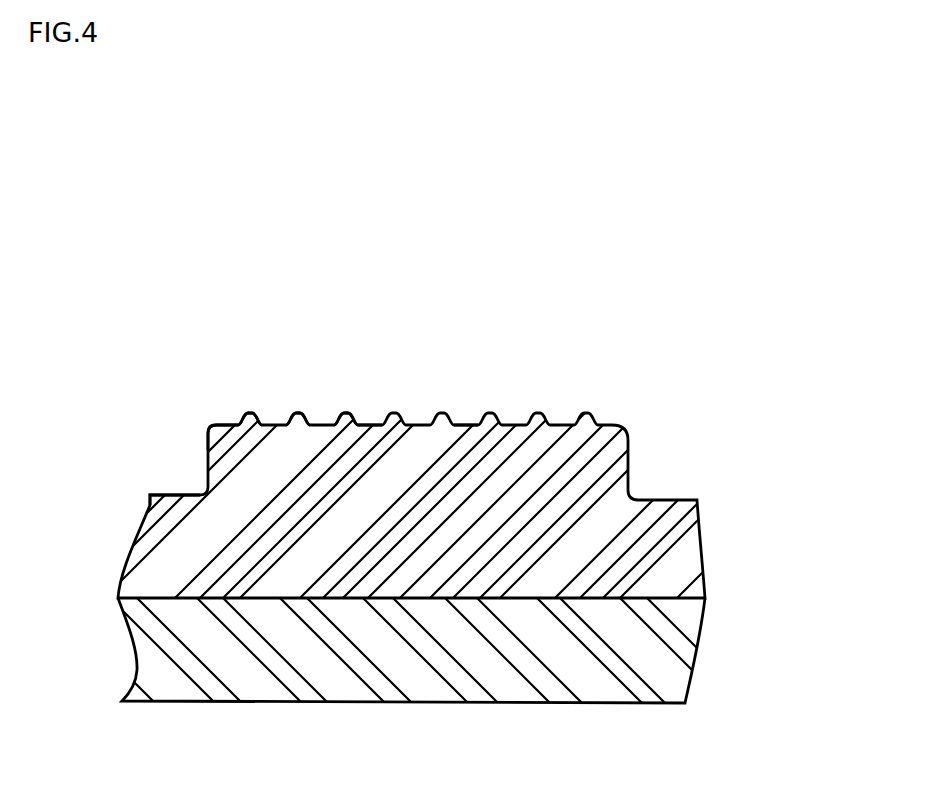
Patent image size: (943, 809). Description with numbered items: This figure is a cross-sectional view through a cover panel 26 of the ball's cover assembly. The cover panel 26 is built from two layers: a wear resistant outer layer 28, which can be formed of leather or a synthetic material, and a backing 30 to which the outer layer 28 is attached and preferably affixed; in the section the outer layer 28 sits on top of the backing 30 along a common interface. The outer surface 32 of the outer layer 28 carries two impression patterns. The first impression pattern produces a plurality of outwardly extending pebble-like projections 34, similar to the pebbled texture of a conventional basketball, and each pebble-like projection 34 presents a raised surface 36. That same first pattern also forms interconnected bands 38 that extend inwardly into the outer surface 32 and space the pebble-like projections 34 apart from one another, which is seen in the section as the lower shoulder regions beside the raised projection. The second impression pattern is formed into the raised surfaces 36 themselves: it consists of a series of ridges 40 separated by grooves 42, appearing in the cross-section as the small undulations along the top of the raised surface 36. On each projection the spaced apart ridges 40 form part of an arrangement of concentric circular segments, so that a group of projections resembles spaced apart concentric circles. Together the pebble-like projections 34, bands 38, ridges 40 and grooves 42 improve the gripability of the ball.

The cover panel 26 is at (683, 313).
The outer layer 28 is at (665, 553).
The backing 30 is at (652, 678).
The outer surface 32 is at (468, 425).
The pebble-like projections 34 is at (225, 436).
The raised surfaces 36 is at (308, 426).
The bands 38 is at (165, 495).
The ridges 40 is at (352, 417).
The grooves 42 is at (373, 425).